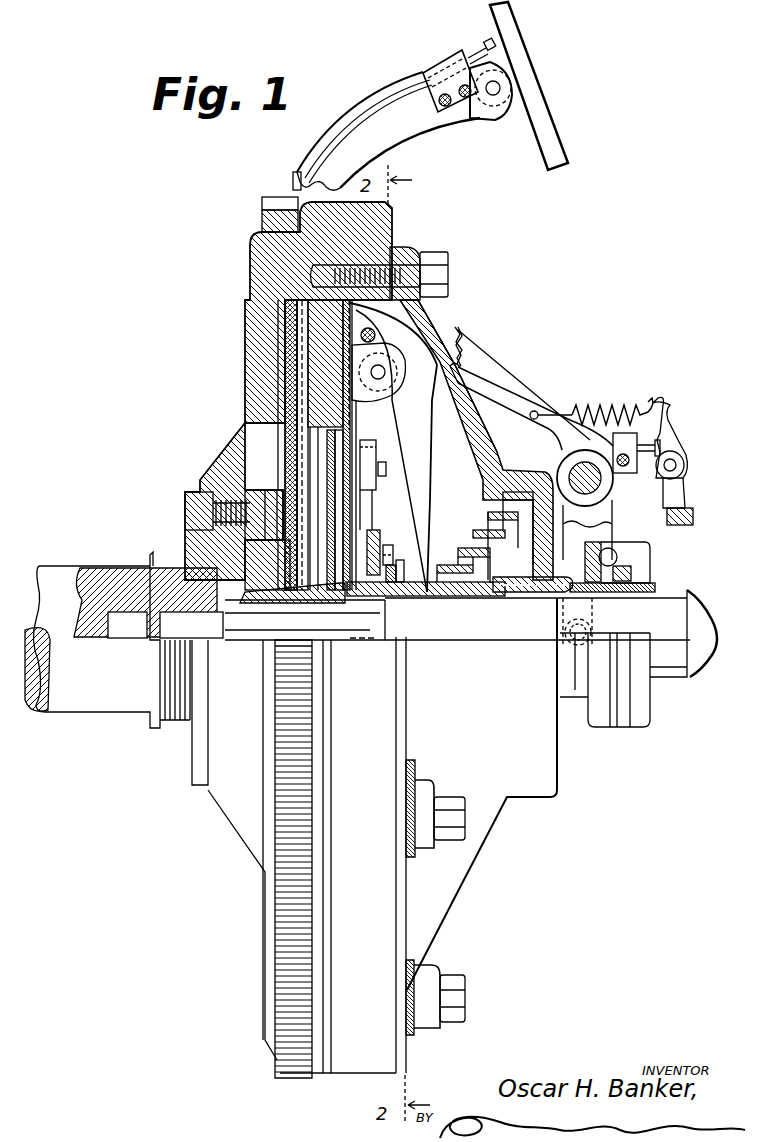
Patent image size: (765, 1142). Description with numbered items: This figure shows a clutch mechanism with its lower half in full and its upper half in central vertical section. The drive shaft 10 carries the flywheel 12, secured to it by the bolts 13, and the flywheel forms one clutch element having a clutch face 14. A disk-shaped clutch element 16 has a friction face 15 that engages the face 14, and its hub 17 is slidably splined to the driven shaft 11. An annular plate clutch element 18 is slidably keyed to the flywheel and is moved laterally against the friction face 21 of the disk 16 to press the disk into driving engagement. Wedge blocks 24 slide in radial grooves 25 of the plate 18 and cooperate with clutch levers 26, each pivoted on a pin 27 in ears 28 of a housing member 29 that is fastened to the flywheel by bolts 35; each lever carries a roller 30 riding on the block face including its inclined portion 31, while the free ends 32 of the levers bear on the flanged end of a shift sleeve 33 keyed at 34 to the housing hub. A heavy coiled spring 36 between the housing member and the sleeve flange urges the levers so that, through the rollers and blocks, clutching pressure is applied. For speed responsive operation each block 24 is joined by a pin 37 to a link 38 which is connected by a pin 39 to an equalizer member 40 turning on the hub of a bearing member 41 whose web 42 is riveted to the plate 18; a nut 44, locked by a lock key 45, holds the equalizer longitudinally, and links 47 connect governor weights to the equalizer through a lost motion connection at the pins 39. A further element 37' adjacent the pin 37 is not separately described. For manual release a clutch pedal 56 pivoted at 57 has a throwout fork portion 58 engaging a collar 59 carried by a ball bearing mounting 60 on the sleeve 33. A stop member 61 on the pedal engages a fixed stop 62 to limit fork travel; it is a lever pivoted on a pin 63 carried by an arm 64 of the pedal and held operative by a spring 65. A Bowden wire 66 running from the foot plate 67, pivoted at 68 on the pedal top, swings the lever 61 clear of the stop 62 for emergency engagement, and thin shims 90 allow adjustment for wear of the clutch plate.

The drive shaft 10 is at (98, 700).
The driven shaft 11 is at (505, 632).
The flywheel 12 is at (235, 438).
The bolts 13 is at (186, 512).
The clutch face 14 is at (286, 340).
The friction face 15 is at (357, 370).
The clutch element 16 is at (297, 468).
The hub 17 is at (277, 589).
The clutch element 18 is at (326, 325).
The friction face 21 is at (286, 318).
The wedge blocks 24 is at (364, 428).
The grooves 25 is at (364, 352).
The clutch levers 26 is at (412, 457).
The pin 27 is at (412, 312).
The ears 28 is at (448, 333).
The housing member 29 is at (477, 361).
The roller 30 is at (353, 363).
The inclined portion 31 is at (360, 392).
The free ends 32 is at (436, 553).
The shift collar or sleeve 33 is at (464, 597).
The key 34 is at (525, 596).
The bolts 35 is at (432, 255).
The coiled spring 36 is at (488, 517).
The pin 37 is at (382, 454).
The stop 37' is at (274, 365).
The link 38 is at (365, 502).
The pin 39 is at (391, 565).
The equalizer member 40 is at (380, 597).
The bearing member 41 is at (358, 600).
The web or disk portion 42 is at (333, 540).
The nut 44 is at (404, 596).
The lock key 45 is at (410, 596).
The link 47 is at (378, 545).
The clutch pedal 56 is at (528, 394).
The pivot 57 is at (595, 492).
The throwout fork portion 58 is at (592, 535).
The collar or ring 59 is at (606, 737).
The ball bearing journal mounting 60 is at (612, 556).
The stop member 61 is at (681, 499).
The fixed stop 62 is at (686, 525).
The pin 63 is at (674, 463).
The arm 64 is at (652, 460).
The spring 65 is at (600, 408).
The Bowden wire 66 is at (484, 44).
The foot plate 67 is at (543, 104).
The pivot 68 is at (492, 90).
The shims 90 is at (407, 244).